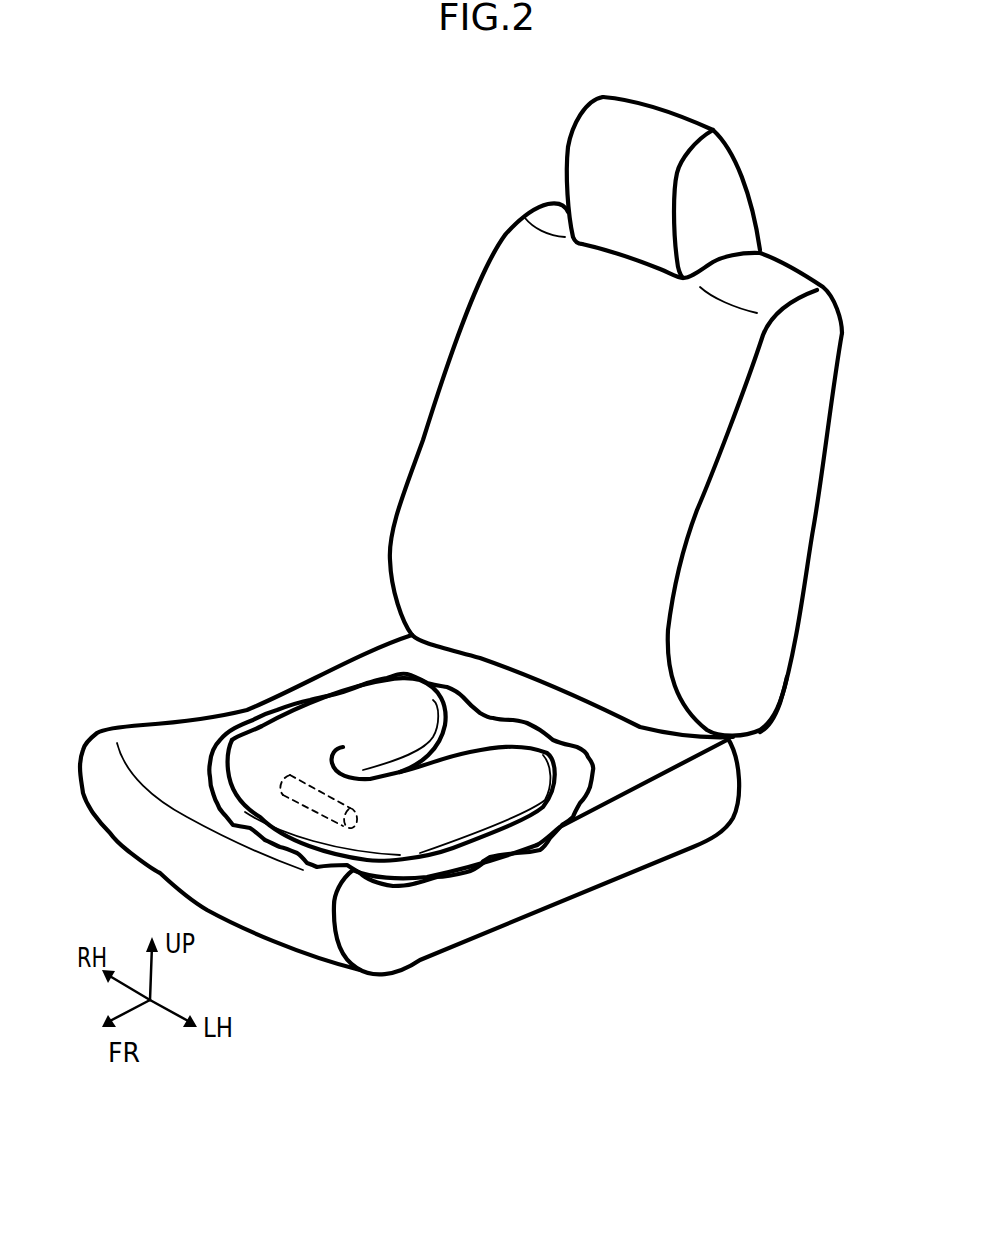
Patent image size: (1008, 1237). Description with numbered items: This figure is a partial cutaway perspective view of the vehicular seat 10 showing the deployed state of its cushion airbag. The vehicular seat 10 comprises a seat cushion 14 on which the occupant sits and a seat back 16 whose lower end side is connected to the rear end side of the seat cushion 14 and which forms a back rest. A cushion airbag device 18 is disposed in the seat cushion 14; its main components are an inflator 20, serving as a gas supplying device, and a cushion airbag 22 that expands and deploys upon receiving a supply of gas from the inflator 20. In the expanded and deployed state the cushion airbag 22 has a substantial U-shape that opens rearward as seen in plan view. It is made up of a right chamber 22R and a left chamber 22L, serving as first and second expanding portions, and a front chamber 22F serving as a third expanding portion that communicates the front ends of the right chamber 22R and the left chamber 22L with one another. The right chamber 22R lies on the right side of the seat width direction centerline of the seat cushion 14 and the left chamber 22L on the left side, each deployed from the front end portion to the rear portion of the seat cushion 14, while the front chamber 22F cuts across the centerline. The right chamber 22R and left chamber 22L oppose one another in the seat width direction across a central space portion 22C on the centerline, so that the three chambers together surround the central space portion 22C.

The vehicular seat 10 is at (280, 382).
The seat cushion 14 is at (673, 823).
The seat back 16 is at (780, 560).
The cushion airbag device 18 is at (467, 851).
The inflator 20 is at (283, 777).
The cushion airbag 22 is at (405, 704).
The front chamber 22F is at (338, 780).
The left chamber 22L is at (440, 777).
The right chamber 22R is at (395, 695).
The central space portion 22C is at (447, 750).